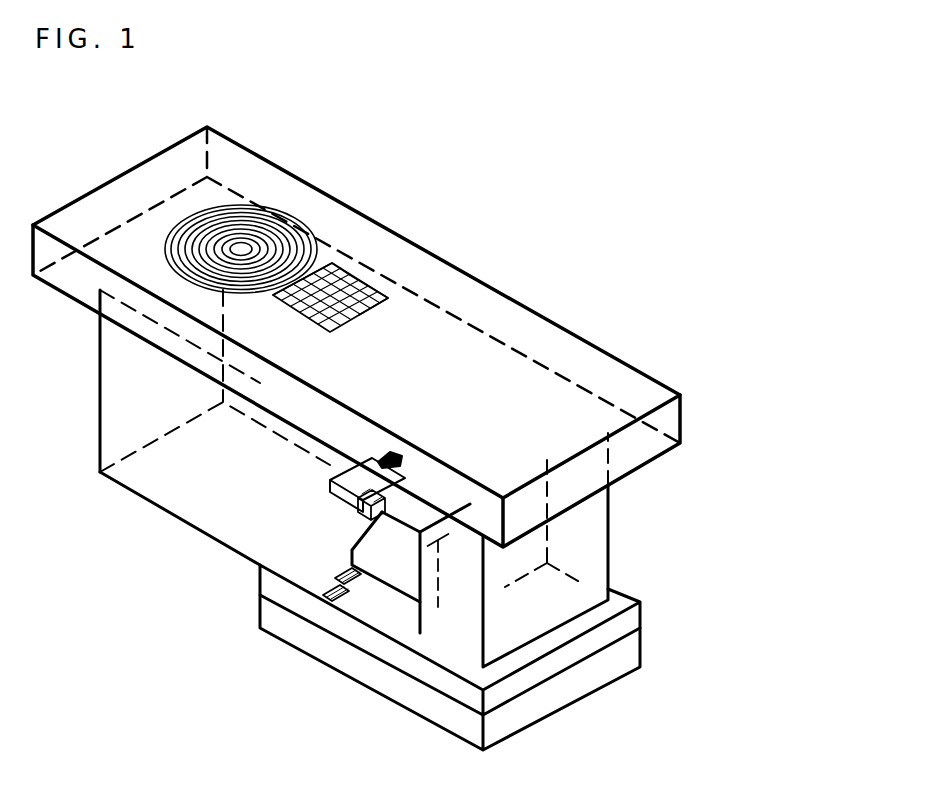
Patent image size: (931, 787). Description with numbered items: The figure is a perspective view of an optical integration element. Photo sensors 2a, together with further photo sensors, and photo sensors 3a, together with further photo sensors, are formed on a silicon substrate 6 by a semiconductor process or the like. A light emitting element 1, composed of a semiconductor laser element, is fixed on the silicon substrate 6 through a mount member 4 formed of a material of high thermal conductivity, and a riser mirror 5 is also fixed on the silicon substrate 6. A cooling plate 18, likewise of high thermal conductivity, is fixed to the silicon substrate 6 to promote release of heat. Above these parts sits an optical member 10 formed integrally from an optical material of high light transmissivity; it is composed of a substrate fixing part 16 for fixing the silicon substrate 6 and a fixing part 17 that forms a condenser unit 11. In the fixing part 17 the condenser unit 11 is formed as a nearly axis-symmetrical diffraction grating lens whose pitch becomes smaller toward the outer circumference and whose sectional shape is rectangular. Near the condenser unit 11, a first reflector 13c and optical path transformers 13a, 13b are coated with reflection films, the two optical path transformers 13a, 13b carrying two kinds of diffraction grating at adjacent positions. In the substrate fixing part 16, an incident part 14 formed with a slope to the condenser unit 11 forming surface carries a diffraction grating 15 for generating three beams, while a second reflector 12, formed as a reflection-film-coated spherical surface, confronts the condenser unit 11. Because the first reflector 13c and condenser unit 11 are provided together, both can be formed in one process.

The light emitting element 1 is at (440, 453).
The photo sensor 2a is at (328, 590).
The photo sensor 3a is at (320, 600).
The mount member 4 is at (330, 525).
The riser mirror 5 is at (392, 573).
The silicon substrate 6 is at (563, 658).
The optical member 10 is at (94, 433).
The condenser unit 11 is at (255, 205).
The second reflector 12 is at (180, 523).
The optical path transformer 13a is at (345, 280).
The optical path transformer 13b is at (380, 296).
The first reflector 13c is at (318, 265).
The incident part 14 is at (330, 478).
The diffraction grating 15 is at (398, 452).
The substrate fixing part 16 is at (552, 577).
The fixing part 17 is at (72, 290).
The cooling plate 18 is at (523, 715).